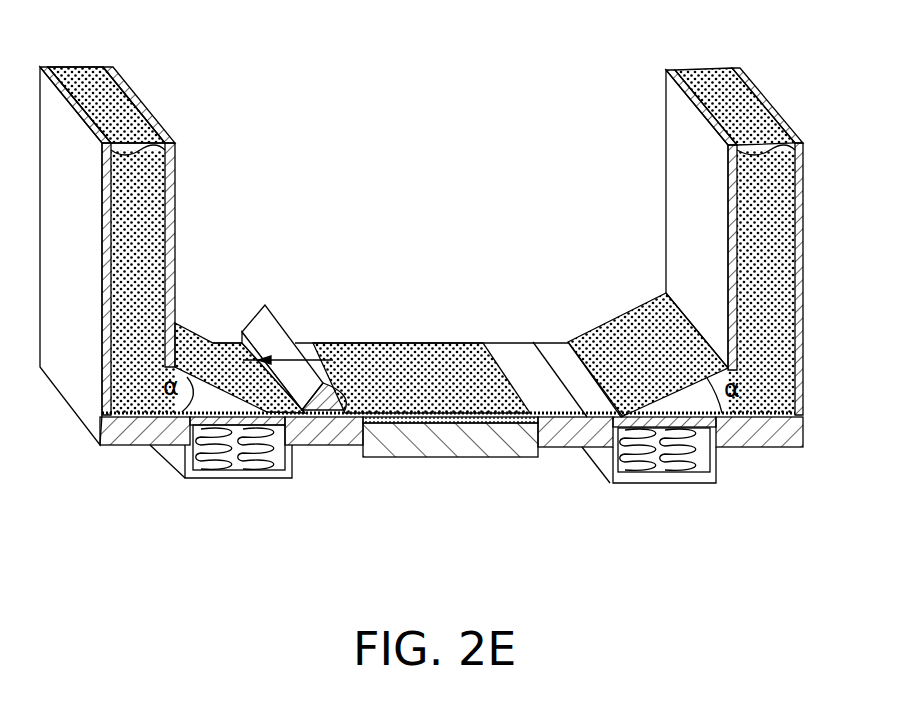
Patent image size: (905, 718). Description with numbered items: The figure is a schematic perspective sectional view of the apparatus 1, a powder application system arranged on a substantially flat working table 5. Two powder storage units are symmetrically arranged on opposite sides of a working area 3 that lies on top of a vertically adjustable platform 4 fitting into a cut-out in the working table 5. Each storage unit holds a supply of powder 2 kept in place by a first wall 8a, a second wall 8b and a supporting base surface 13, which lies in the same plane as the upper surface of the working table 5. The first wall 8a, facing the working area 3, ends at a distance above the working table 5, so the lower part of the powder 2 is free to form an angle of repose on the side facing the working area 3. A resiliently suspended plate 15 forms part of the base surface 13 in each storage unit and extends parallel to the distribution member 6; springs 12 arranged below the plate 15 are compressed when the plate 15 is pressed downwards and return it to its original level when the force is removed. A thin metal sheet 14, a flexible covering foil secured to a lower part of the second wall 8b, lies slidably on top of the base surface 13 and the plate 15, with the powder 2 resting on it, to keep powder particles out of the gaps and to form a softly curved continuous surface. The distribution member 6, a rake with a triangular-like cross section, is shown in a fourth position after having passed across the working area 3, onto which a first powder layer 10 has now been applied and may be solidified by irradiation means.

The apparatus 1 is at (428, 170).
The powder 2 is at (150, 190).
The working area 3 is at (404, 365).
The vertically adjustable platform 4 is at (448, 437).
The working table 5 is at (347, 507).
The distribution member 6 is at (270, 330).
The first wall 8a is at (193, 235).
The second wall 8b is at (53, 125).
The first powder layer 10 is at (480, 427).
The springs 12 is at (253, 465).
The supporting base surface 13 is at (122, 413).
The thin metal sheet 14 is at (152, 417).
The resiliently suspended plate 15 is at (175, 470).